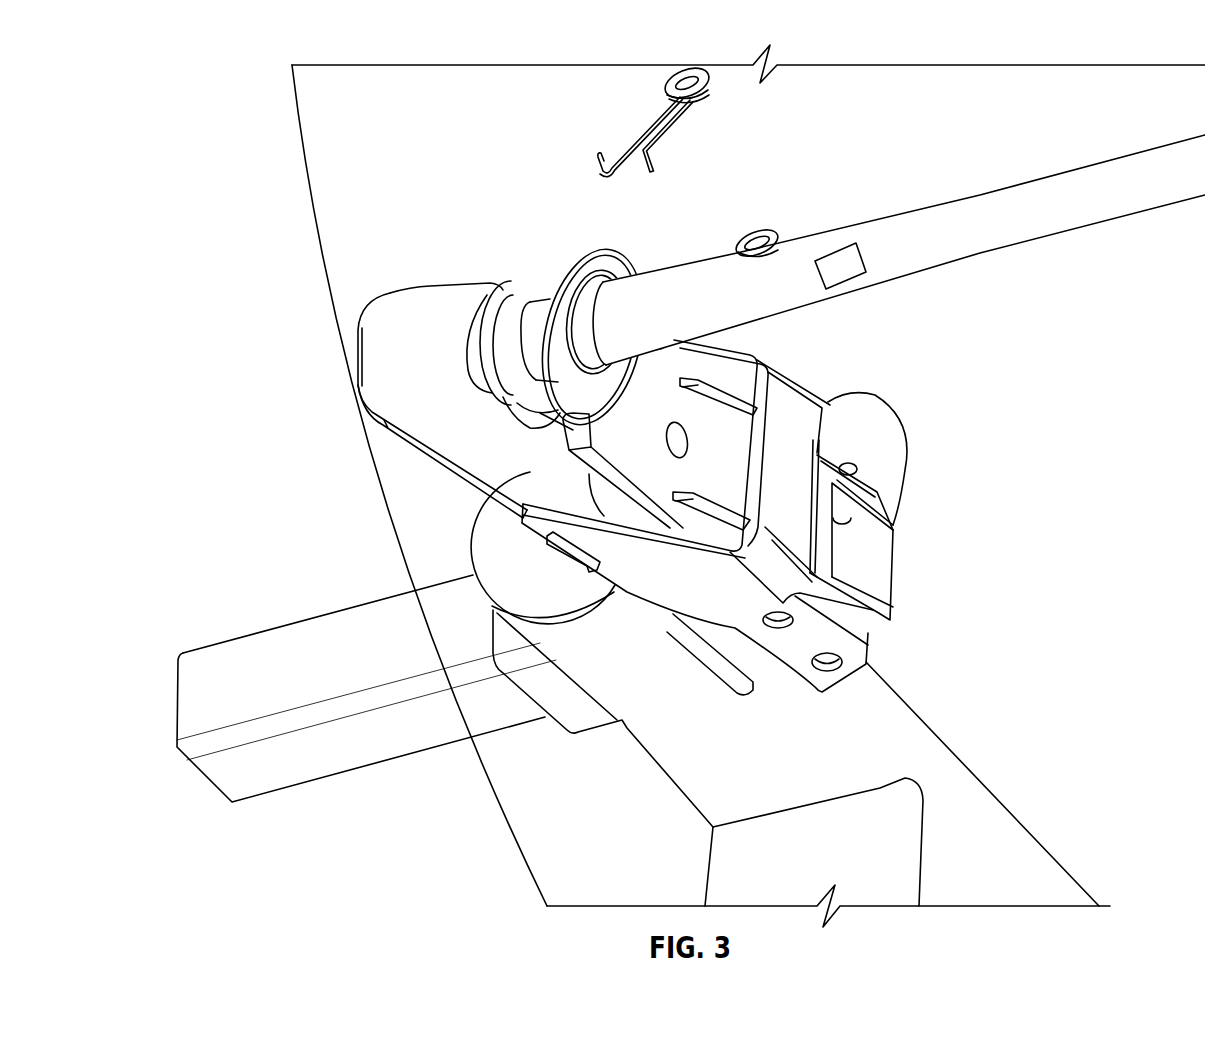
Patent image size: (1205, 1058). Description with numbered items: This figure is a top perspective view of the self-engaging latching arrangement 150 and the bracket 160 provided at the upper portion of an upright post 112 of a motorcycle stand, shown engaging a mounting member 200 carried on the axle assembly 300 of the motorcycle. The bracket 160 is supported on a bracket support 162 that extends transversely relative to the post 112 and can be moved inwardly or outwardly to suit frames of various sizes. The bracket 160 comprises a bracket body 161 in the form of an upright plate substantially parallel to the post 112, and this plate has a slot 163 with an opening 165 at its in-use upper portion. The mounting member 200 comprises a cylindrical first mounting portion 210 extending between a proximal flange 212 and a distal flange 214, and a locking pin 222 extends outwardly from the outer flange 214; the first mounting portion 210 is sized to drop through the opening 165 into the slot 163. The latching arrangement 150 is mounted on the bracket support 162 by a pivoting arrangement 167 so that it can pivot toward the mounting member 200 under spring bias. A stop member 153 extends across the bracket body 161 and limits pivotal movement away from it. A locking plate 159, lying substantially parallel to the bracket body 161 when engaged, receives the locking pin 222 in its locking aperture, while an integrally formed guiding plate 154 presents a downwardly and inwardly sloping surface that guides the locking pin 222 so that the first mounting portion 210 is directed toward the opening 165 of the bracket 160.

The post 112 is at (945, 777).
The self-engaging latching arrangement 150 is at (763, 617).
The stop member 153 is at (780, 455).
The guiding plate 154 is at (403, 342).
The locking plate 159 is at (520, 463).
The bracket 160 is at (862, 556).
The bracket body 161 is at (690, 420).
The bracket support 162 is at (275, 643).
The slot 163 is at (656, 296).
The opening 165 is at (503, 394).
The pivoting arrangement 167 is at (856, 660).
The mounting member 200 is at (532, 286).
The first mounting portion 210 is at (538, 313).
The proximal flange 212 is at (594, 266).
The distal flange 214 is at (493, 287).
The locking pin 222 is at (473, 333).
The axle assembly 300 is at (907, 228).